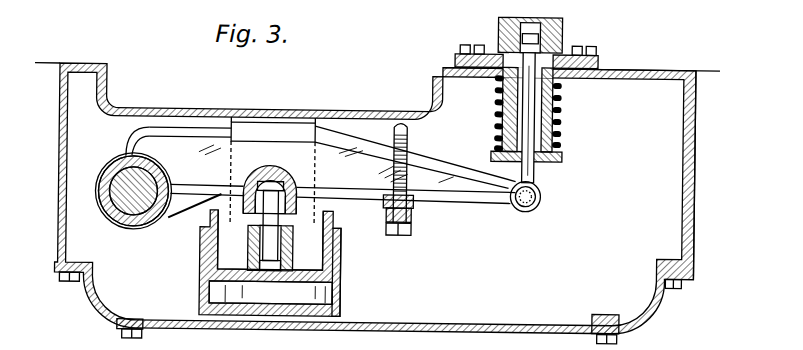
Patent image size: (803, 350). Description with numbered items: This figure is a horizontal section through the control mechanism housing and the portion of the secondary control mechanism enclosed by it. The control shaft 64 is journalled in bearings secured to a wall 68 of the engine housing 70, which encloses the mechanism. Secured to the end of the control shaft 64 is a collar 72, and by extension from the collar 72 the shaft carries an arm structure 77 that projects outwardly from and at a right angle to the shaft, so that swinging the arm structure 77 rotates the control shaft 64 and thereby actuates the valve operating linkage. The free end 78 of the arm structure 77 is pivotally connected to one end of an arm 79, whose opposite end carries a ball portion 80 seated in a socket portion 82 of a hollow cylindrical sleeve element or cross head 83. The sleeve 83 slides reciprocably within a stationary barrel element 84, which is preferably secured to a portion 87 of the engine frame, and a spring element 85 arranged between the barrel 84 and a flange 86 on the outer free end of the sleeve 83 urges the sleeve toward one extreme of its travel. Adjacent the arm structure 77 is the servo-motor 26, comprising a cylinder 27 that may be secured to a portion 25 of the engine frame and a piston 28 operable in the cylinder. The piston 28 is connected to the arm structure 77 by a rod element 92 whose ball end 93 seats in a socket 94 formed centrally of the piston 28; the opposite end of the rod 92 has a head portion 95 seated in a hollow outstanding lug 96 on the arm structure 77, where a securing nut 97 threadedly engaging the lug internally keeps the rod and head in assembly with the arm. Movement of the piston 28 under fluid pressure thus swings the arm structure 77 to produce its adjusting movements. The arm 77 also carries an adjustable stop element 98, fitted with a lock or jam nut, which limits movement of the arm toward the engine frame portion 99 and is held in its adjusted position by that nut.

The portion of the engine frame 25 is at (320, 125).
The servo-motor 26 is at (202, 305).
The cylinder 27 is at (343, 294).
The piston 28 is at (343, 260).
The control shaft 64 is at (127, 227).
The wall 68 is at (60, 166).
The engine housing 70 is at (697, 178).
The collar 72 is at (99, 198).
The arm structure 77 is at (353, 201).
The free end of the arm 78 is at (521, 205).
The arm 79 is at (536, 121).
The ball portion 80 is at (562, 38).
The socket portion 82 is at (502, 50).
The sleeve element or cross head 83 is at (556, 84).
The stationary barrel element 84 is at (597, 47).
The spring element 85 is at (496, 124).
The flange 86 is at (563, 152).
The portion of the engine frame 87 is at (650, 63).
The rod element 92 is at (281, 226).
The ball end 93 is at (293, 254).
The socket 94 is at (252, 254).
The head portion 95 is at (274, 167).
The hollow outstanding lug 96 is at (298, 177).
The securing nut 97 is at (263, 214).
The adjustable stop element 98 is at (413, 225).
The engine frame portion 99 is at (412, 120).